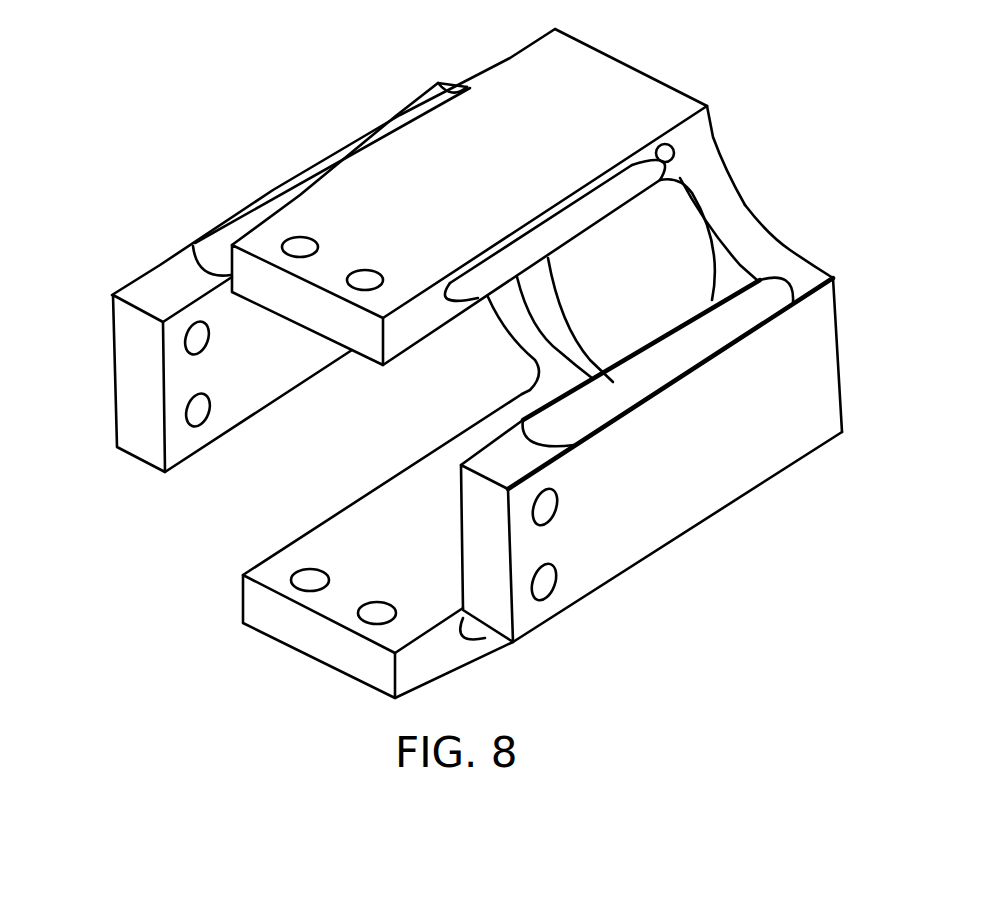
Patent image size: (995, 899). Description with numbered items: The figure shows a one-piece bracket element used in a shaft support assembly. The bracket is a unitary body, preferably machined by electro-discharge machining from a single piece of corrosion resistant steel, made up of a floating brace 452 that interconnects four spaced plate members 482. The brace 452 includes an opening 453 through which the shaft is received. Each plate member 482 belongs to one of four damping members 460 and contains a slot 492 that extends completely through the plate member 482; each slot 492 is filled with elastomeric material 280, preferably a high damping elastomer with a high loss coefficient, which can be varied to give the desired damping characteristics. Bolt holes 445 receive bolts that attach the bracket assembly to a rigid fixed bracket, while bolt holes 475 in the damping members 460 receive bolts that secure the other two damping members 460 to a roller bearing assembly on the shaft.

The elastomeric material 280 is at (423, 110).
The bolt holes 445 is at (195, 338).
The floating brace 452 is at (745, 203).
The opening 453 is at (575, 330).
The damping members 460 is at (258, 412).
The bolt holes 475 is at (367, 288).
The plate member 482 is at (155, 292).
The slot 492 is at (715, 128).